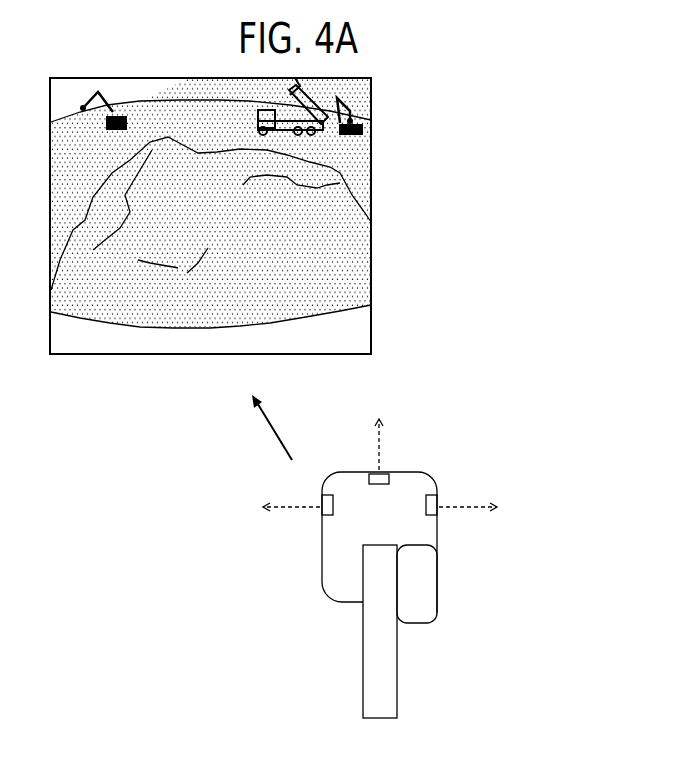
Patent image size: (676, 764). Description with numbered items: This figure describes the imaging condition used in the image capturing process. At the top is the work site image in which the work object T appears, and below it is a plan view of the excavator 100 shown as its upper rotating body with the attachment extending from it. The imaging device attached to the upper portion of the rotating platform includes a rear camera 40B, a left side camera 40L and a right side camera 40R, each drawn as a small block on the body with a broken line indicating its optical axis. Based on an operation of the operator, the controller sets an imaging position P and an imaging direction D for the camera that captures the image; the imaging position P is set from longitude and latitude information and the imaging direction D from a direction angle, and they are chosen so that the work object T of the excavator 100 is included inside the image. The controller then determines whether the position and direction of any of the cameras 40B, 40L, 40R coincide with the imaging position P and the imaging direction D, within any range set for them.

The work object T is at (337, 165).
The excavator 100 is at (390, 559).
The rear camera 40B is at (385, 480).
The right side camera 40R is at (322, 510).
The left side camera 40L is at (437, 510).
The imaging direction D is at (274, 427).
The imaging position P is at (455, 595).